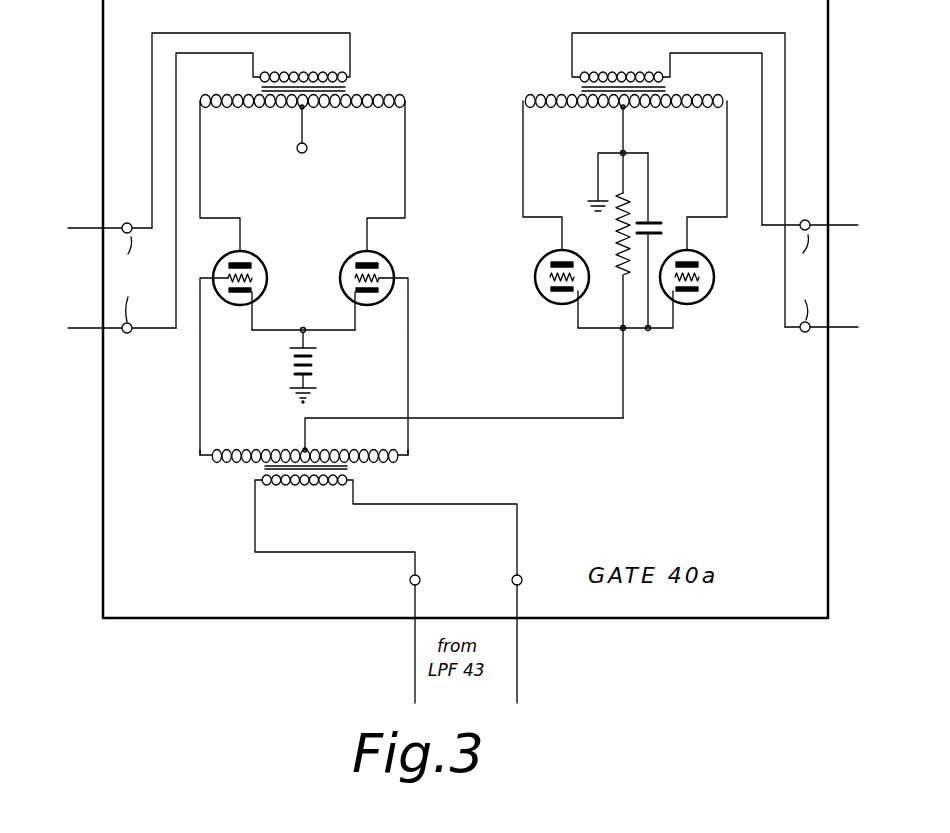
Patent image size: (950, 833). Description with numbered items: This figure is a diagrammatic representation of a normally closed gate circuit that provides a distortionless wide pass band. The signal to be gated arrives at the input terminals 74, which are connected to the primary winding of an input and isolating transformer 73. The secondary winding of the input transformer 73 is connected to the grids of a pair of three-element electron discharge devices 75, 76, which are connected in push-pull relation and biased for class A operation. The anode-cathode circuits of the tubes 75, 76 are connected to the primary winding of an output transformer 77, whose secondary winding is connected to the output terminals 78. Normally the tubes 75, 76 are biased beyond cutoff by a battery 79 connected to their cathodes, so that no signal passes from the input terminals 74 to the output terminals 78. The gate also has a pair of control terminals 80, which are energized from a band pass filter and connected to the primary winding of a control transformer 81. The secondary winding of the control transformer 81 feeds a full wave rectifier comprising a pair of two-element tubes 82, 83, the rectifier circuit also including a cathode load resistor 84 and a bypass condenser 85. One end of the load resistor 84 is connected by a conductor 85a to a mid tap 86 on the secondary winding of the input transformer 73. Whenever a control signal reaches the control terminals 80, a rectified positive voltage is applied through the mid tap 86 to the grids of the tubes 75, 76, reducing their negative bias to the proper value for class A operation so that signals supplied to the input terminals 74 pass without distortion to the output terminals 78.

The input and isolating transformer 73 is at (262, 469).
The input terminals 74 is at (512, 580).
The three-element electron discharge device 75 is at (257, 258).
The three-element electron discharge device 76 is at (385, 258).
The output transformer 77 is at (348, 90).
The output terminals 78 is at (125, 338).
The battery 79 is at (320, 372).
The control terminals 80 is at (800, 346).
The control transformer 81 is at (578, 90).
The two-element tube 82 is at (546, 262).
The two-element tube 83 is at (705, 260).
The cathode load resistor 84 is at (617, 242).
The bypass condenser 85 is at (660, 222).
The conductor 85a is at (527, 416).
The mid tap 86 is at (303, 449).